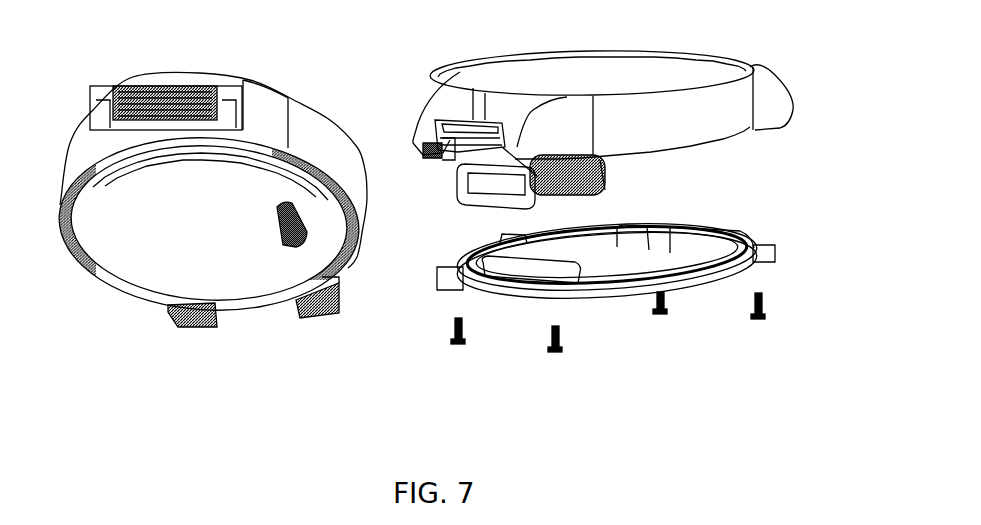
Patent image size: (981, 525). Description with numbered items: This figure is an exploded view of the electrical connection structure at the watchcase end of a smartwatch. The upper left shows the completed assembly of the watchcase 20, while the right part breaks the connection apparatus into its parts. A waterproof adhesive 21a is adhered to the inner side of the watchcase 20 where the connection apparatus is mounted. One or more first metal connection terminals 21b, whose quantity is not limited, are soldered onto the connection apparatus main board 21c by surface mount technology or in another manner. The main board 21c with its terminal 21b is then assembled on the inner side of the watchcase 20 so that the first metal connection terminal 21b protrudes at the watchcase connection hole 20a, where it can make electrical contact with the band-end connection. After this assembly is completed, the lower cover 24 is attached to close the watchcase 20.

The watchcase 20 is at (568, 82).
The watchcase connection hole 20a is at (472, 130).
The waterproof adhesive 21a is at (465, 204).
The first metal connection terminal 21b is at (597, 177).
The connection apparatus main board 21c is at (607, 170).
The lower cover 24 is at (580, 290).